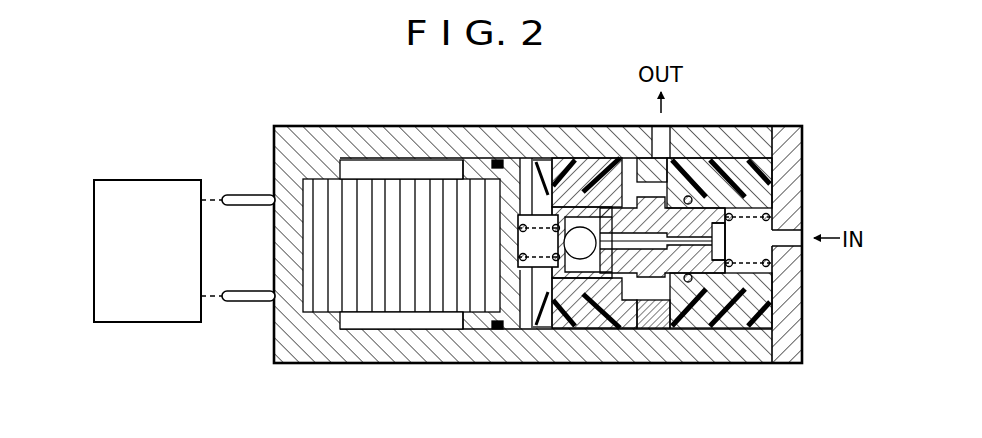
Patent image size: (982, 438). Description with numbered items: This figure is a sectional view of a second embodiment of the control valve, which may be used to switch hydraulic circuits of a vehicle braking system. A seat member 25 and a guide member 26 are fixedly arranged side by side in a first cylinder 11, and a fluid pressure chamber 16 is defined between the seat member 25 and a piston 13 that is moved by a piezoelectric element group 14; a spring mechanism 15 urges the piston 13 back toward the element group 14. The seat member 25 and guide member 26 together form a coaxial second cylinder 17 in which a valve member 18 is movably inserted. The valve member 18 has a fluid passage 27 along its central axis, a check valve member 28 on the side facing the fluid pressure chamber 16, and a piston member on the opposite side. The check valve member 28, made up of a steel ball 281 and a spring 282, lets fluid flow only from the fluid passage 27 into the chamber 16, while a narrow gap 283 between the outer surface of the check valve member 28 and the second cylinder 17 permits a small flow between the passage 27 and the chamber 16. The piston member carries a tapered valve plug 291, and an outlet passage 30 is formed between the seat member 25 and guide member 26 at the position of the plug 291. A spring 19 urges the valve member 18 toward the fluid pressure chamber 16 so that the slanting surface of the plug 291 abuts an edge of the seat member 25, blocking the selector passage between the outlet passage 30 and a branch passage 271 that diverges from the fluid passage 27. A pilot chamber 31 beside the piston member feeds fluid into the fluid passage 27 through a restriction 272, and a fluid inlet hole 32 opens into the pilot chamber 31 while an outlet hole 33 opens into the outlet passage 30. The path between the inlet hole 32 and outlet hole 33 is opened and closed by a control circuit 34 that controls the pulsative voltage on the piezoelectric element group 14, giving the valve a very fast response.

The first cylinder 11 is at (368, 157).
The piston 13 is at (480, 330).
The piezoelectric element group 14 is at (391, 300).
The spring mechanism 15 is at (527, 168).
The fluid pressure chamber 16 is at (534, 298).
The second cylinder 17 is at (774, 208).
The valve member 18 is at (690, 296).
The spring 19 is at (768, 272).
The seat member 25 is at (605, 159).
The guide member 26 is at (748, 152).
The fluid passage 27 is at (622, 276).
The branch passage 271 is at (622, 170).
The restriction 272 is at (765, 303).
The check valve member 28 is at (538, 178).
The steel ball 281 is at (577, 300).
The spring 282 is at (519, 215).
The narrow gap 283 is at (557, 206).
The tapered valve plug 291 is at (645, 285).
The outlet passage 30 is at (681, 157).
The pilot chamber 31 is at (774, 258).
The fluid inlet hole 32 is at (799, 239).
The outlet hole 33 is at (667, 132).
The control circuit 34 is at (160, 180).